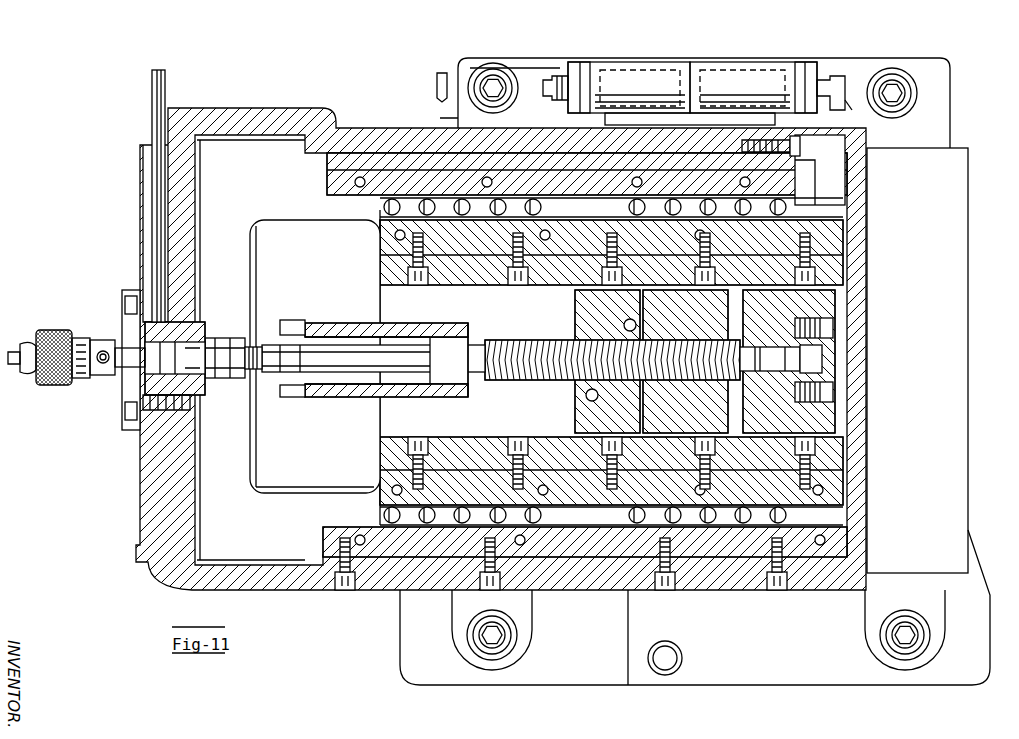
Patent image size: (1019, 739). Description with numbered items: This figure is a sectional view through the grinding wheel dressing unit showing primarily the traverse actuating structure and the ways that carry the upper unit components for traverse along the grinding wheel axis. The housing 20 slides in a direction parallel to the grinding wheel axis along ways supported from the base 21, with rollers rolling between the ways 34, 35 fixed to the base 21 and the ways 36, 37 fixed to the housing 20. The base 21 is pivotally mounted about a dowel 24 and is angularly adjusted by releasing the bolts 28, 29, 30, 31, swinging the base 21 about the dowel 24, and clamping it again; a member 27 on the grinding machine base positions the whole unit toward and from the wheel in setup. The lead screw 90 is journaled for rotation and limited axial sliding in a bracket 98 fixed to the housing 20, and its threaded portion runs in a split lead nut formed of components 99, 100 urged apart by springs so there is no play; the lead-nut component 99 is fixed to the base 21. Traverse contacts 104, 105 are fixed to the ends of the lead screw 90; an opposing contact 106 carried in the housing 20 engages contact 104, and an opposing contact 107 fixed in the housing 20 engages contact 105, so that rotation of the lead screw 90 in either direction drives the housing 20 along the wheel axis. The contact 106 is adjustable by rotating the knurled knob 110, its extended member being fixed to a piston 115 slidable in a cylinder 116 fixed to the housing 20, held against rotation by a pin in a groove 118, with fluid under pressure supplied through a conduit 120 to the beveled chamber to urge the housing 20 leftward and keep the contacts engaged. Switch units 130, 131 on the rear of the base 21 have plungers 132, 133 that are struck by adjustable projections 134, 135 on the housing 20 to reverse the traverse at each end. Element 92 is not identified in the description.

The housing 20 is at (238, 127).
The base 21 is at (968, 244).
The dowel 24 is at (665, 672).
The member 27 is at (796, 680).
The bolt 28 is at (492, 650).
The bolt 29 is at (905, 650).
The bolt 30 is at (892, 80).
The bolt 31 is at (490, 76).
The way 34 is at (372, 218).
The way 35 is at (378, 488).
The way 36 is at (323, 540).
The way 37 is at (327, 175).
The lead screw 90 is at (456, 350).
The sleeve key tab 92 is at (296, 320).
The bracket 98 is at (333, 323).
The lead-nut component 99 is at (585, 314).
The lead-nut component 100 is at (748, 318).
The traverse contact 104 is at (248, 372).
The traverse contact 105 is at (795, 392).
The opposing contact 106 is at (234, 350).
The opposing contact 107 is at (812, 346).
The knurled knob 110 is at (46, 330).
The piston 115 is at (162, 358).
The cylinder 116 is at (188, 320).
The groove 118 is at (192, 352).
The conduit 120 is at (155, 310).
The switch unit 130 is at (625, 76).
The switch unit 131 is at (735, 76).
The plunger 132 is at (546, 80).
The plunger 133 is at (830, 78).
The adjustable projection 134 is at (436, 88).
The adjustable projection 135 is at (848, 104).